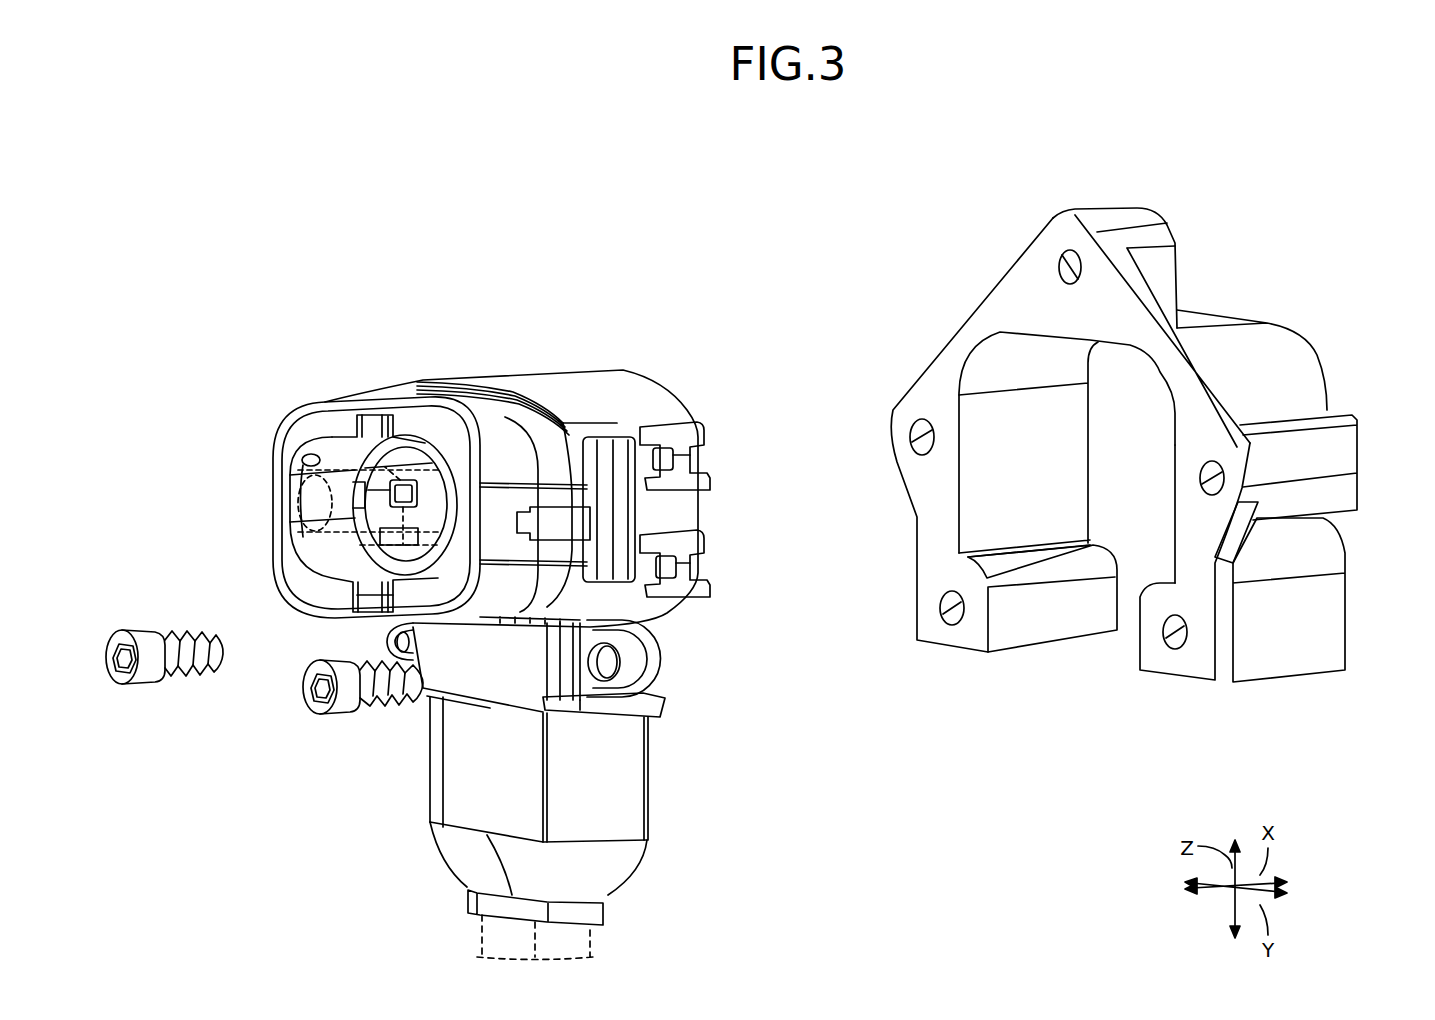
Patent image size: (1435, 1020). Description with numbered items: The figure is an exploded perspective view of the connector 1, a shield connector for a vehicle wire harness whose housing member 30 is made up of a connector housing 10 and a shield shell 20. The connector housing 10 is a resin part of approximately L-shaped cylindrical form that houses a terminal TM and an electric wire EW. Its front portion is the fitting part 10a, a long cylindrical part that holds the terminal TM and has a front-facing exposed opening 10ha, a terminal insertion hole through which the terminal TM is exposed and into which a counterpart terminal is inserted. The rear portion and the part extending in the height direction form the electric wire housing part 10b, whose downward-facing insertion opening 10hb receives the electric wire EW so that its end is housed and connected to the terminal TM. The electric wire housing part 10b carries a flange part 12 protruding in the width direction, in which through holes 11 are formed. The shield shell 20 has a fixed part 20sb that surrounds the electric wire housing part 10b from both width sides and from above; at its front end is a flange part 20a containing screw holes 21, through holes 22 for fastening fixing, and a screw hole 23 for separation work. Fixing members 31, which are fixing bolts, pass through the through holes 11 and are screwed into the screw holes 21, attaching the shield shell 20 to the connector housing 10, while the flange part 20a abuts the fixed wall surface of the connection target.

The connector 1 is at (1253, 210).
The housing member 30 is at (697, 197).
The connector housing 10 is at (616, 380).
The fitting part 10a is at (492, 376).
The electric wire housing part 10b is at (613, 364).
The exposed opening 10ha is at (300, 462).
The insertion opening 10hb is at (592, 938).
The through holes 11 is at (387, 636).
The flange part 12 is at (388, 645).
The shield shell 20 is at (1032, 284).
The flange part 20a is at (1097, 294).
The fixed part 20sb is at (1275, 368).
The screw holes 21 is at (950, 627).
The through holes 22 is at (912, 437).
The screw hole 23 is at (1080, 268).
The fixing members 31 is at (152, 673).
The terminal TM is at (330, 512).
The electric wire EW is at (593, 945).